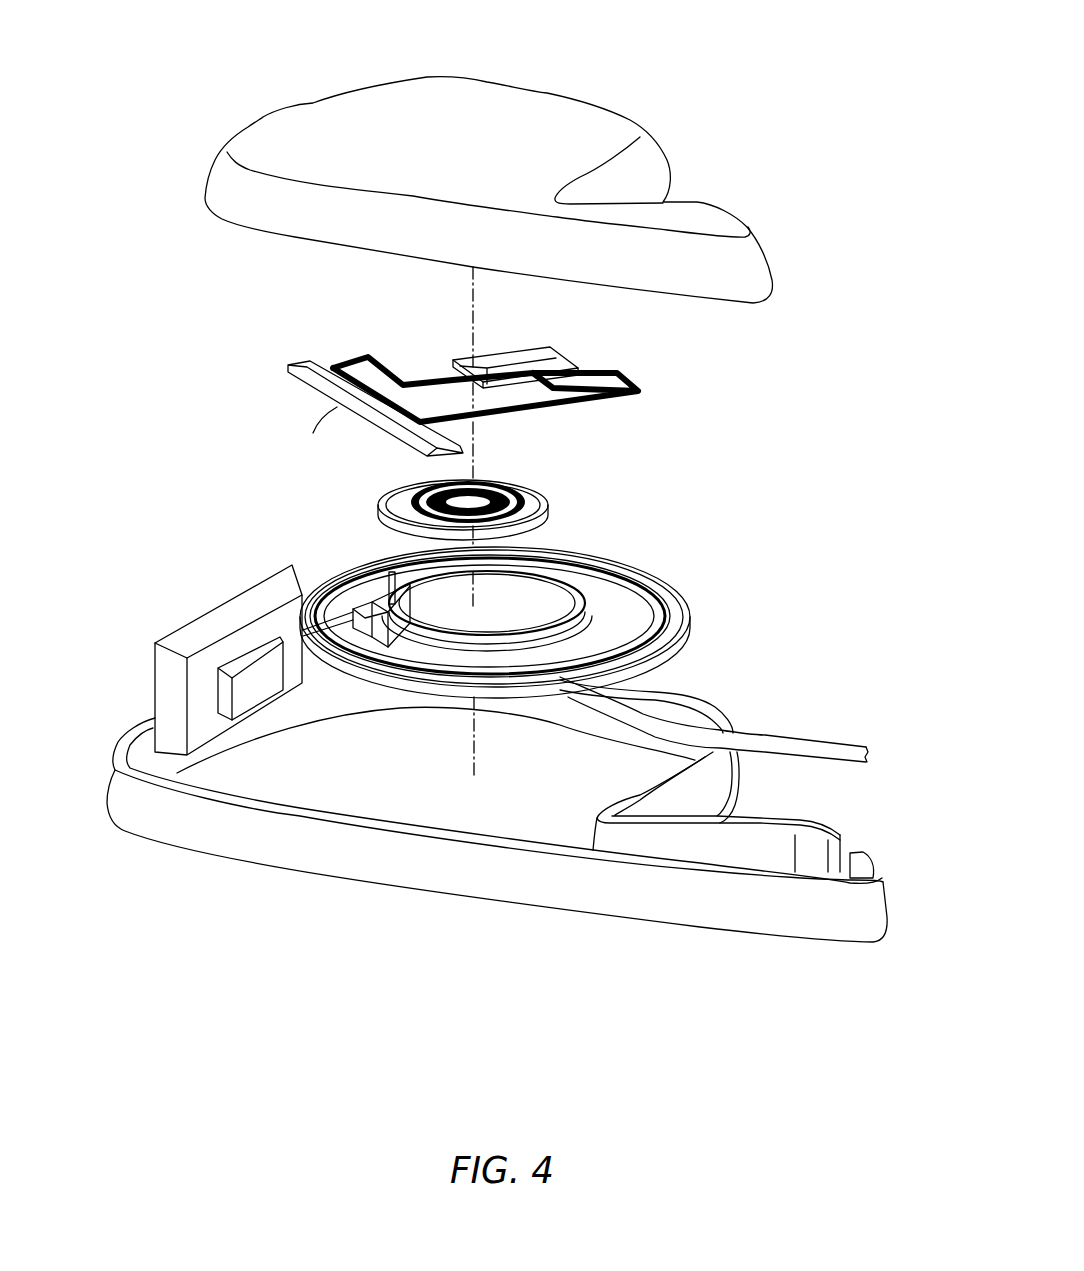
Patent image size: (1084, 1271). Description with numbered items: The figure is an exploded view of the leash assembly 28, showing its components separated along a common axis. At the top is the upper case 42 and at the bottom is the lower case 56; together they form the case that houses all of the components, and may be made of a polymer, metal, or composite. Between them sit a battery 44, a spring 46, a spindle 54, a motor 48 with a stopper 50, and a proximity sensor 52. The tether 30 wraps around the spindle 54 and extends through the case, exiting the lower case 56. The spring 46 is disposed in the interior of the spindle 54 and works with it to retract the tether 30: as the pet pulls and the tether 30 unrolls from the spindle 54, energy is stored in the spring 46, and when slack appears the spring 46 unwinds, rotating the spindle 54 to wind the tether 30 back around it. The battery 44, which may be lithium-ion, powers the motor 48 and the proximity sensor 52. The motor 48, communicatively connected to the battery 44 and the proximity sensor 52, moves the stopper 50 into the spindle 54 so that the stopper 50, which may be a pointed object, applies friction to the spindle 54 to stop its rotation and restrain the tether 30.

The leash assembly 28 is at (785, 36).
The upper case 42 is at (222, 186).
The battery 44 is at (510, 358).
The spring 46 is at (516, 488).
The motor 48 is at (218, 605).
The stopper 50 is at (353, 610).
The proximity sensor 52 is at (252, 683).
The spindle 54 is at (688, 632).
The tether 30 is at (795, 748).
The lower case 56 is at (255, 838).